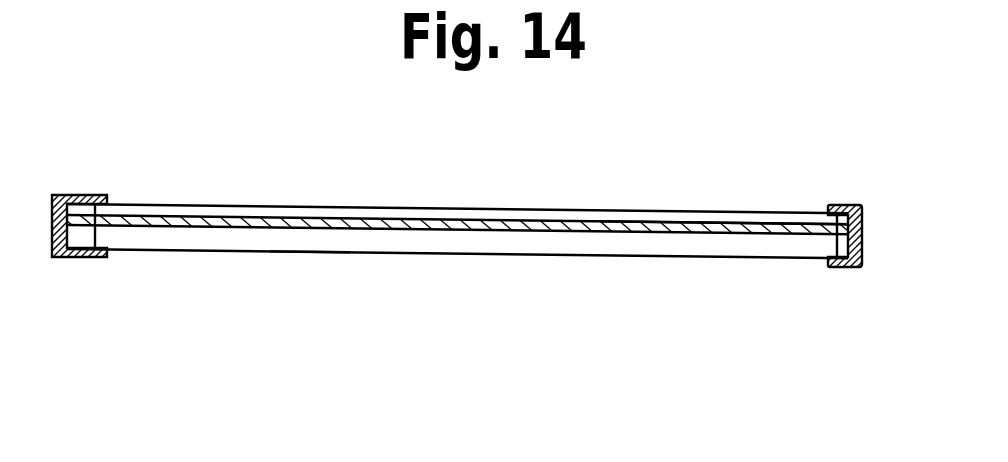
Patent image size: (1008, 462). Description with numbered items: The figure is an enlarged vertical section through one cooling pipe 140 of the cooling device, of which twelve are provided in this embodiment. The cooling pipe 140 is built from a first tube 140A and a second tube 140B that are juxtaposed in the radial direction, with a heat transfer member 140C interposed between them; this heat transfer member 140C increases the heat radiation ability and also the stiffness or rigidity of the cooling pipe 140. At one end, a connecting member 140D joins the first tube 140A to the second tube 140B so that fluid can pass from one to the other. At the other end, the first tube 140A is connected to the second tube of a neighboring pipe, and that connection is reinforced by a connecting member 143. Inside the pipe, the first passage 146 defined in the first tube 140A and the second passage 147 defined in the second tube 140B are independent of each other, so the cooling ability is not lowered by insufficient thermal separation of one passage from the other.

The cooling pipe 140 is at (456, 226).
The first tube 140A is at (592, 210).
The second tube 140B is at (603, 253).
The heat transfer member 140C is at (713, 223).
The connecting member 140D is at (858, 207).
The connecting member 143 is at (72, 192).
The first passage 146 is at (400, 212).
The second passage 147 is at (313, 243).